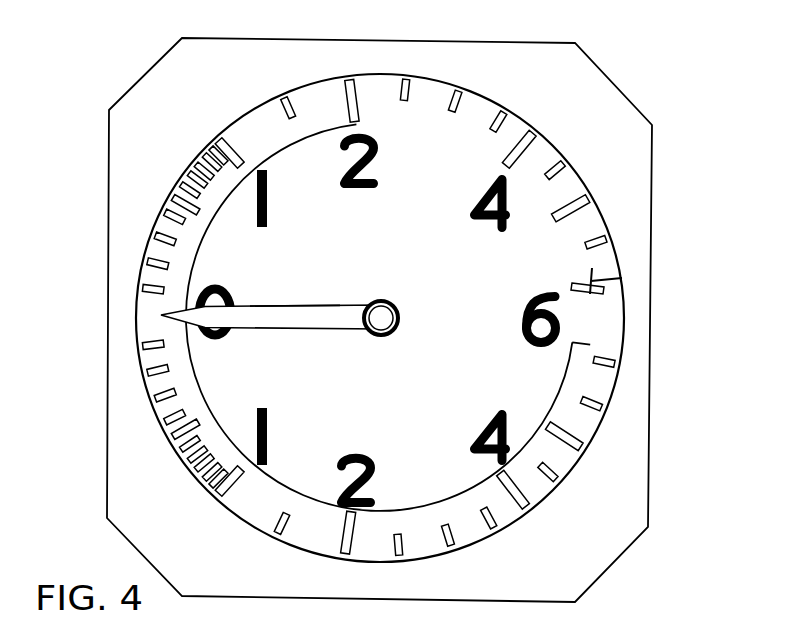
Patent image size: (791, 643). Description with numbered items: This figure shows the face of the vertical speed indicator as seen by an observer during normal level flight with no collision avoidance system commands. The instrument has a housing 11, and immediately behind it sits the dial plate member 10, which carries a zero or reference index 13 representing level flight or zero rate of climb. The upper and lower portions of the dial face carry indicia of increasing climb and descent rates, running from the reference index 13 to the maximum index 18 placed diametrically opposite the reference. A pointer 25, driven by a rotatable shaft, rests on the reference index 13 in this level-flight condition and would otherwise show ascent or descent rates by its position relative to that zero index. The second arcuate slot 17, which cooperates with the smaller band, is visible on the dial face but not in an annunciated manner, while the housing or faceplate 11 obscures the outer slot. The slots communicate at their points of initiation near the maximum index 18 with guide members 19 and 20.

The dial plate member 10 is at (403, 290).
The housing 11 is at (618, 90).
The zero or reference index 13 is at (160, 312).
The second arcuate slot 17 is at (273, 150).
The maximum index 18 is at (562, 325).
The guide member 19 is at (602, 286).
The guide member 20 is at (584, 350).
The pointer 25 is at (292, 305).